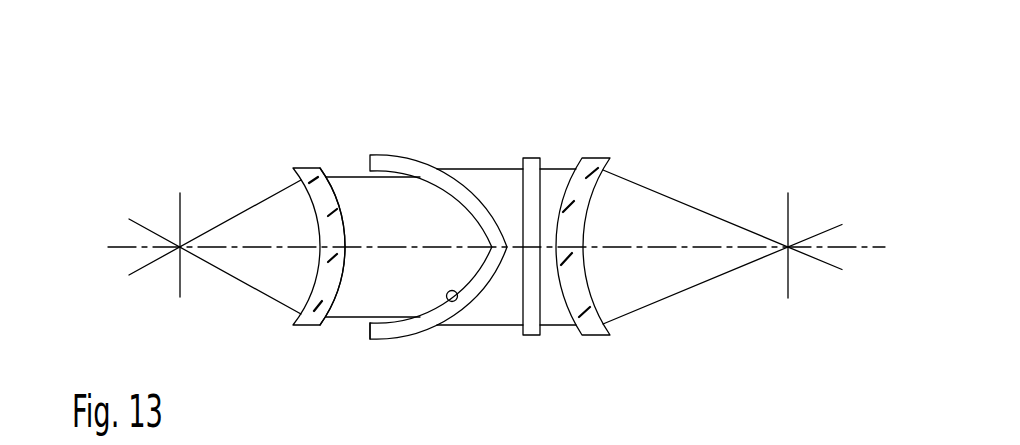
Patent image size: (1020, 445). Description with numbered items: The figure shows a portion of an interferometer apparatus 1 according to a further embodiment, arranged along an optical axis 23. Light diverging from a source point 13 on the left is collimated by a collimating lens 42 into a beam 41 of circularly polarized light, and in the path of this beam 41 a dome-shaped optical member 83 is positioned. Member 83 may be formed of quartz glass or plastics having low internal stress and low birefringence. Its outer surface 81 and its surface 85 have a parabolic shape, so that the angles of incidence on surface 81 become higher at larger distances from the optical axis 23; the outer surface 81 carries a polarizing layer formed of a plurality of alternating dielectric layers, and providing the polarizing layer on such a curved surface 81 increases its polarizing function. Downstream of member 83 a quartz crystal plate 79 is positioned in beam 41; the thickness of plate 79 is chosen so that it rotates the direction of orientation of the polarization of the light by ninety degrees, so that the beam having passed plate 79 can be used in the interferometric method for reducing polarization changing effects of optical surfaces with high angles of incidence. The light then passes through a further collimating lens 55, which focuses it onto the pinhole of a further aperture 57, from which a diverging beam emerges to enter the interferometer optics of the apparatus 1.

The interferometer apparatus 1 is at (400, 100).
The object plane 13 is at (182, 213).
The optical axis 23 is at (866, 245).
The beam 41 is at (340, 322).
The collimating lens 42 is at (304, 165).
The further collimating lens 55 is at (596, 157).
The further aperture 57 is at (789, 214).
The quartz crystal plate 79 is at (531, 336).
The surface 81 is at (415, 337).
The dome-shaped optical member 83 is at (369, 331).
The surface 85 is at (450, 301).